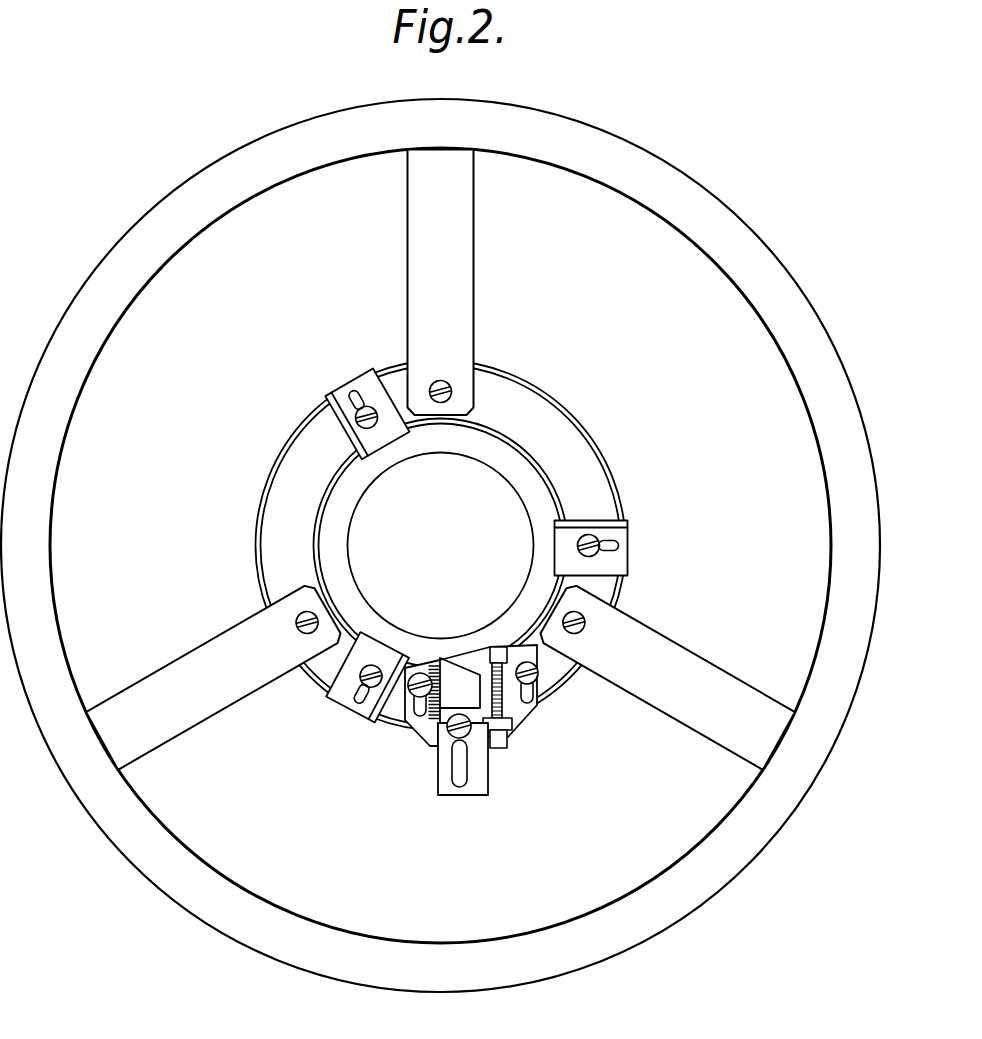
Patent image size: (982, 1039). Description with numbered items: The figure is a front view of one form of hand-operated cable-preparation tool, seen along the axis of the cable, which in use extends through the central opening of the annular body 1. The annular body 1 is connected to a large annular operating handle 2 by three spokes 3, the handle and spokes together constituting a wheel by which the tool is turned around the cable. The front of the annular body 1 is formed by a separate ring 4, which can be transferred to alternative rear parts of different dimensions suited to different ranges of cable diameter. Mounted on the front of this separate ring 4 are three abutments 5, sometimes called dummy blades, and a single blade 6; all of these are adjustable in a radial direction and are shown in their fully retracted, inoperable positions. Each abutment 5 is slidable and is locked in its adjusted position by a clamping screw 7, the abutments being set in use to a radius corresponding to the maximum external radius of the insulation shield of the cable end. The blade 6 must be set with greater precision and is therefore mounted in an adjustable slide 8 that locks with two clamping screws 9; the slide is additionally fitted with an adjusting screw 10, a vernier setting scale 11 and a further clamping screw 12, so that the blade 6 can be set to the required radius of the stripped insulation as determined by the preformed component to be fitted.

The annular body 1 is at (523, 478).
The annular operating handle 2 is at (600, 147).
The spokes 3 is at (450, 268).
The separate ring 4 is at (508, 405).
The abutments 5 is at (362, 383).
The blade 6 is at (470, 795).
The clamping screws 7 is at (365, 458).
The adjustable slide 8 is at (517, 657).
The clamping screws 9 is at (425, 672).
The adjusting screw 10 is at (508, 725).
The vernier setting scale 11 is at (422, 737).
The clamping screw 12 is at (468, 732).